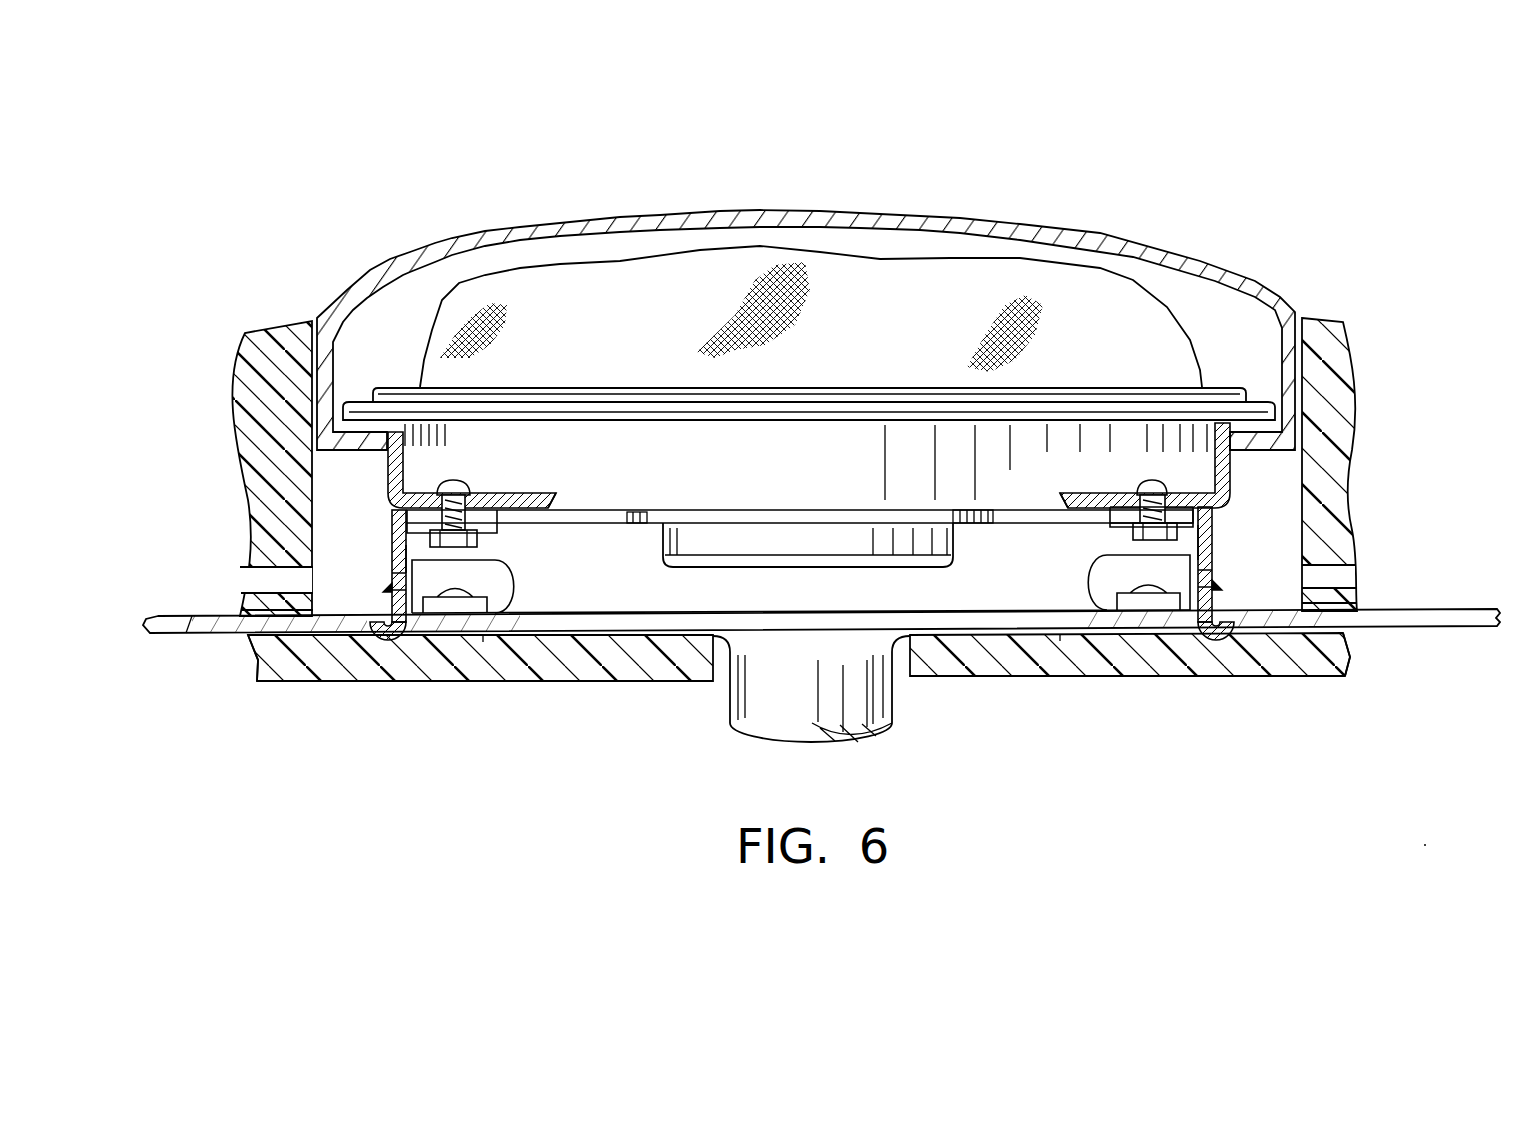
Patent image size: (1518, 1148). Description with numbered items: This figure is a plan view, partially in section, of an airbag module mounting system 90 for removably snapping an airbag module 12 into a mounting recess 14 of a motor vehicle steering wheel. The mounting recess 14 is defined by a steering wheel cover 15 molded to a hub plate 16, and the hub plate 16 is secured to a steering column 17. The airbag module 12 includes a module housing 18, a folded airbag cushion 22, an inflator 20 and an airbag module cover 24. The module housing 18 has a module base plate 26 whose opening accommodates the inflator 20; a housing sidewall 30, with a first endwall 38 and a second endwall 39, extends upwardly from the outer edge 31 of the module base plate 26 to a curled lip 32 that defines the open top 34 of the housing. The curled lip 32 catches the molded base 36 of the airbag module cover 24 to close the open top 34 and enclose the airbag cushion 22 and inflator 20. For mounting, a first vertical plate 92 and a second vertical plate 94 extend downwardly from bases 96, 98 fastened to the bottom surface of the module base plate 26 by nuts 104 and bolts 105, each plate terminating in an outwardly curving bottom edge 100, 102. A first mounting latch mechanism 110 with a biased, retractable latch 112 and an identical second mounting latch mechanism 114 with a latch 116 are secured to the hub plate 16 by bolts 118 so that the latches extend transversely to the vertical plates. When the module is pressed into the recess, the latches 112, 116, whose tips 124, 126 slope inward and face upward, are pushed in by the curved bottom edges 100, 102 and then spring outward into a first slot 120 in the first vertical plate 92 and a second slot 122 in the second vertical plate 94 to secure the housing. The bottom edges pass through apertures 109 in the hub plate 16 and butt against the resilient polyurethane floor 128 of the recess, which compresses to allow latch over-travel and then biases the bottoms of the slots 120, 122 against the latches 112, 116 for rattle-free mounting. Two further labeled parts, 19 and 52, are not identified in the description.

The airbag module 12 is at (595, 211).
The mounting recess 14 is at (1290, 320).
The steering wheel cover 15 is at (1103, 678).
The hub plate 16 is at (1400, 609).
The steering column 17 is at (897, 693).
The module housing 18 is at (538, 388).
The spacer 19 is at (256, 597).
The inflator 20 is at (767, 568).
The airbag cushion 22 is at (905, 252).
The airbag module cover 24 is at (978, 222).
The module base plate 26 is at (551, 500).
The housing sidewall 30 is at (860, 471).
The outer edge 31 is at (440, 482).
The curled lip 32 is at (688, 427).
The open top 34 is at (407, 385).
The molded base 36 is at (318, 410).
The first endwall 38 is at (1216, 482).
The second endwall 39 is at (404, 462).
The connector 52 is at (985, 520).
The airbag module mounting system 90 is at (1125, 187).
The first vertical plate 92 is at (1213, 513).
The second vertical plate 94 is at (400, 523).
The base 96 is at (1118, 526).
The base 98 is at (480, 513).
The bottom edge 100 is at (1300, 640).
The bottom edge 102 is at (255, 641).
The nuts 104 is at (482, 543).
The bolts 105 is at (456, 482).
The apertures 109 is at (396, 641).
The first mounting latch mechanism 110 is at (1097, 603).
The biased retractable latch 112 is at (1220, 584).
The second mounting latch mechanism 114 is at (514, 591).
The biased retractable latch 116 is at (390, 594).
The bolts 118 is at (448, 590).
The first slot 120 is at (1213, 540).
The second slot 122 is at (405, 567).
The tip 124 is at (1218, 573).
The tip 126 is at (393, 587).
The floor 128 is at (483, 639).